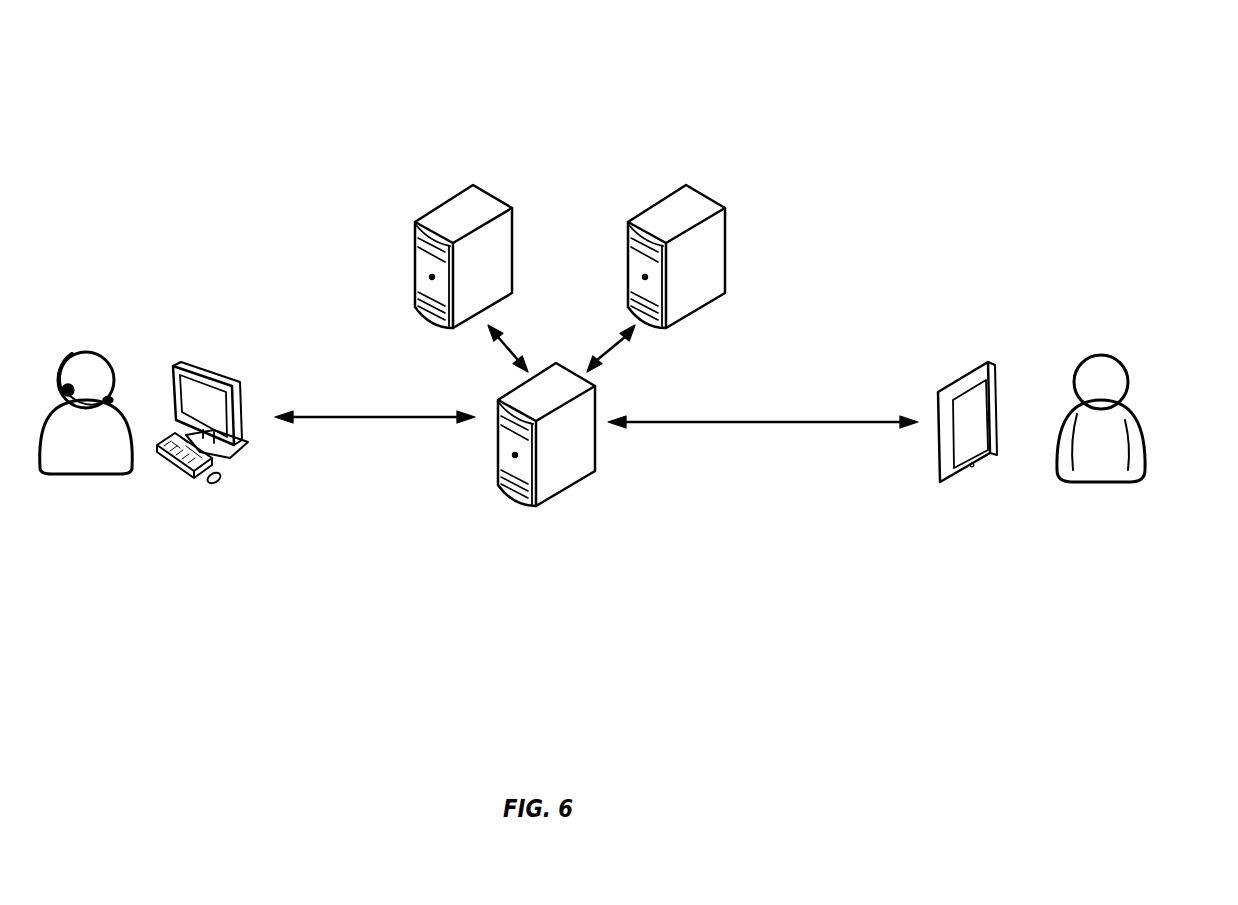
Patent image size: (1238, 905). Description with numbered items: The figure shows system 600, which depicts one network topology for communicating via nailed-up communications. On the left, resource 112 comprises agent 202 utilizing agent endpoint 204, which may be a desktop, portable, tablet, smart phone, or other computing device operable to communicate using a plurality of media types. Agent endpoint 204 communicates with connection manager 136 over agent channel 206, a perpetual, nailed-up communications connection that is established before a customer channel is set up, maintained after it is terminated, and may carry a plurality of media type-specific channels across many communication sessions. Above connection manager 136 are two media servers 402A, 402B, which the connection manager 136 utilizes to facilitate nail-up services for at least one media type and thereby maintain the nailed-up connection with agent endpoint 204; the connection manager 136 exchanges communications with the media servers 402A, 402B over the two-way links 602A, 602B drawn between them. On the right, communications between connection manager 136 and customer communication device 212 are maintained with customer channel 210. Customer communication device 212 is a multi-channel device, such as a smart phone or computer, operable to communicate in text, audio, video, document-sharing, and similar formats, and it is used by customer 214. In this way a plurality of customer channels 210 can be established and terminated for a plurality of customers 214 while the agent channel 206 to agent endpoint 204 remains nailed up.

The system 600 is at (1053, 71).
The resource 112 is at (237, 260).
The agent 202 is at (97, 353).
The agent endpoint 204 is at (200, 370).
The agent channel 206 is at (348, 417).
The media server 402A is at (463, 256).
The media server 402B is at (676, 256).
The communication link to first server 602A is at (511, 348).
The communication link to second server 602B is at (611, 349).
The connection manager 136 is at (595, 472).
The customer channel 210 is at (810, 422).
The customer communication device 212 is at (992, 397).
The customer 214 is at (1128, 382).